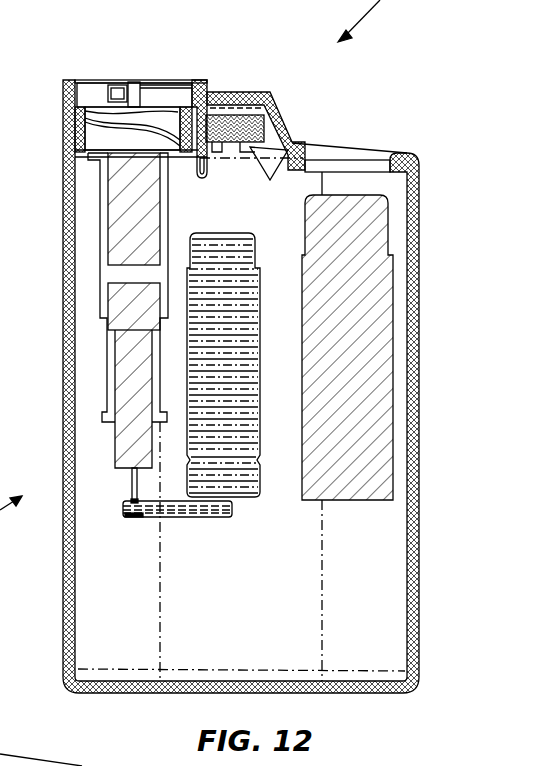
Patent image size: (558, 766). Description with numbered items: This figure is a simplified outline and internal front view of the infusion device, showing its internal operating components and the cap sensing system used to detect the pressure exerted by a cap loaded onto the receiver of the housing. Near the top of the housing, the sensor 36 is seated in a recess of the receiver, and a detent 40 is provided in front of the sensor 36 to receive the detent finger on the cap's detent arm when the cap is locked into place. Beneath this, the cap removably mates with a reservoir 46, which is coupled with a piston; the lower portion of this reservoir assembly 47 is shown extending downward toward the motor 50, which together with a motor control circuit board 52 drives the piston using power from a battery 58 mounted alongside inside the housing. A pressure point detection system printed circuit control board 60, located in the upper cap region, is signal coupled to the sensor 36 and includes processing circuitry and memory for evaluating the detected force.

The sensor 36 is at (116, 82).
The detent 40 is at (134, 80).
The reservoir 46 is at (127, 222).
The plunger shaft 47 is at (117, 354).
The motor 50 is at (250, 510).
The motor control circuit board 52 is at (166, 521).
The battery 58 is at (367, 504).
The pressure point detection system printed circuit control board 60 is at (292, 148).